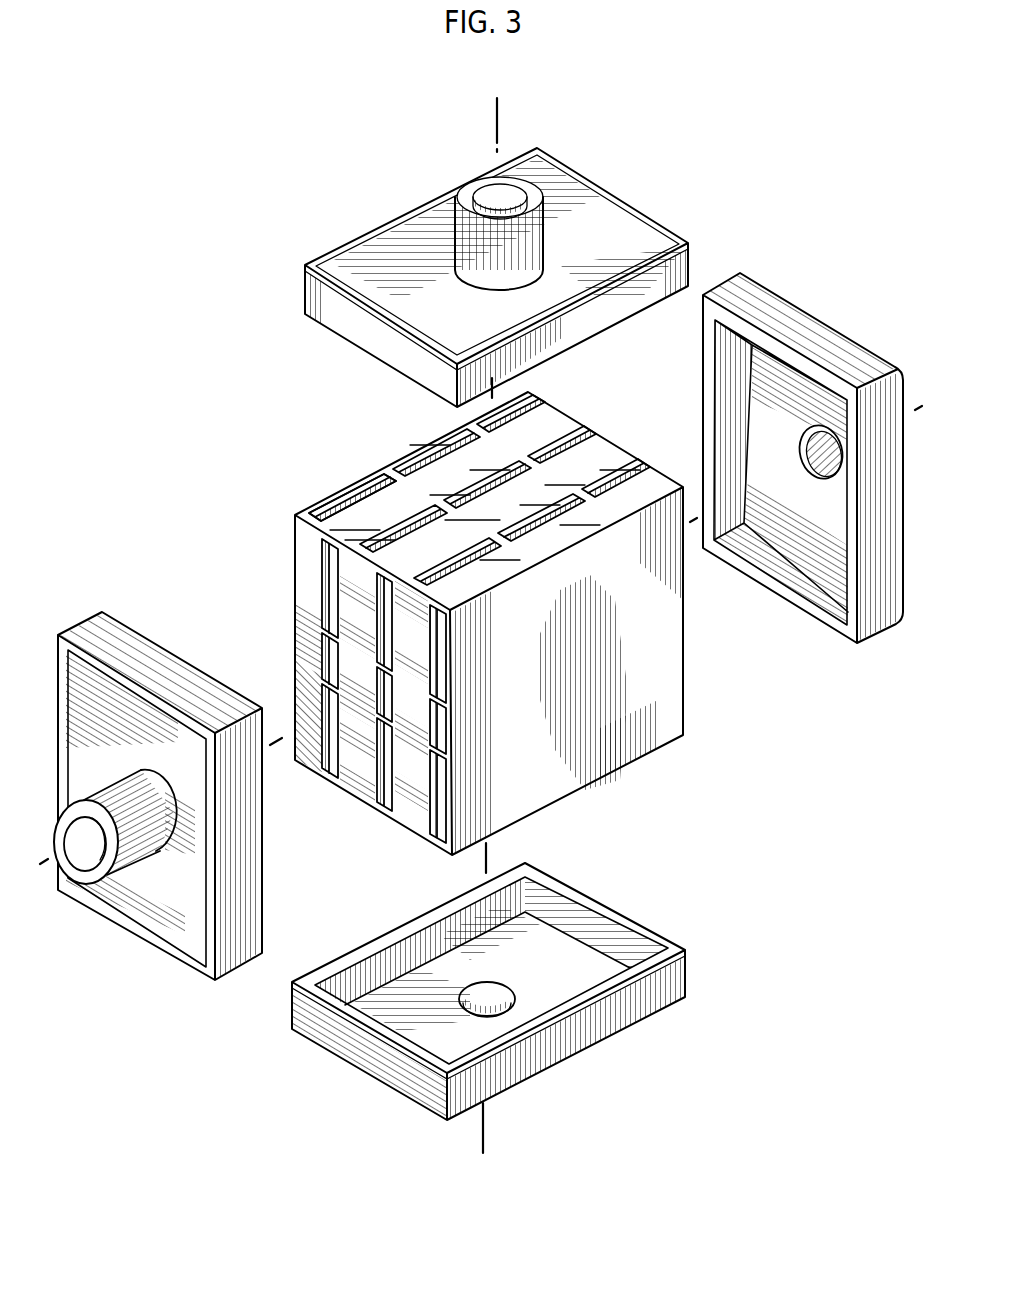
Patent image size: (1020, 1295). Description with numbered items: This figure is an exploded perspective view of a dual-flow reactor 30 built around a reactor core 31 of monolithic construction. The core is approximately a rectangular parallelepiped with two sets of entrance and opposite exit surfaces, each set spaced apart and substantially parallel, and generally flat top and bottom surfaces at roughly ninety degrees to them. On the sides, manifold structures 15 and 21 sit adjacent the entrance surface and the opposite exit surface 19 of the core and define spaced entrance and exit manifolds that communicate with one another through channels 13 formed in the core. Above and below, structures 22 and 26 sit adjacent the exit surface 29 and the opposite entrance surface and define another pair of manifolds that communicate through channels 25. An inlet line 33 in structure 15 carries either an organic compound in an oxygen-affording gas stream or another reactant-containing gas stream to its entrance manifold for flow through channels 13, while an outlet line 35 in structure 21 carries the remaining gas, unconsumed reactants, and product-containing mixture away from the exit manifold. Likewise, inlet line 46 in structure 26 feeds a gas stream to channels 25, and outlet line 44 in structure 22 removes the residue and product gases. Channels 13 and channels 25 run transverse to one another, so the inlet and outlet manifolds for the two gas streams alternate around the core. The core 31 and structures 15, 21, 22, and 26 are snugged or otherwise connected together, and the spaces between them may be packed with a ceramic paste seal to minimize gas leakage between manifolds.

The channels 13 is at (320, 717).
The manifold structure 15 is at (800, 620).
The exit surface 19 is at (412, 778).
The manifold structure 21 is at (157, 957).
The manifold structure 22 is at (619, 197).
The channels 25 is at (617, 473).
The manifold structure 26 is at (568, 1058).
The exit surface 29 is at (405, 505).
The dual-flow reactor 30 is at (722, 215).
The reactor core 31 is at (604, 812).
The inlet line 33 is at (825, 430).
The outlet line 35 is at (147, 780).
The outlet line 44 is at (470, 188).
The inlet line 46 is at (505, 985).